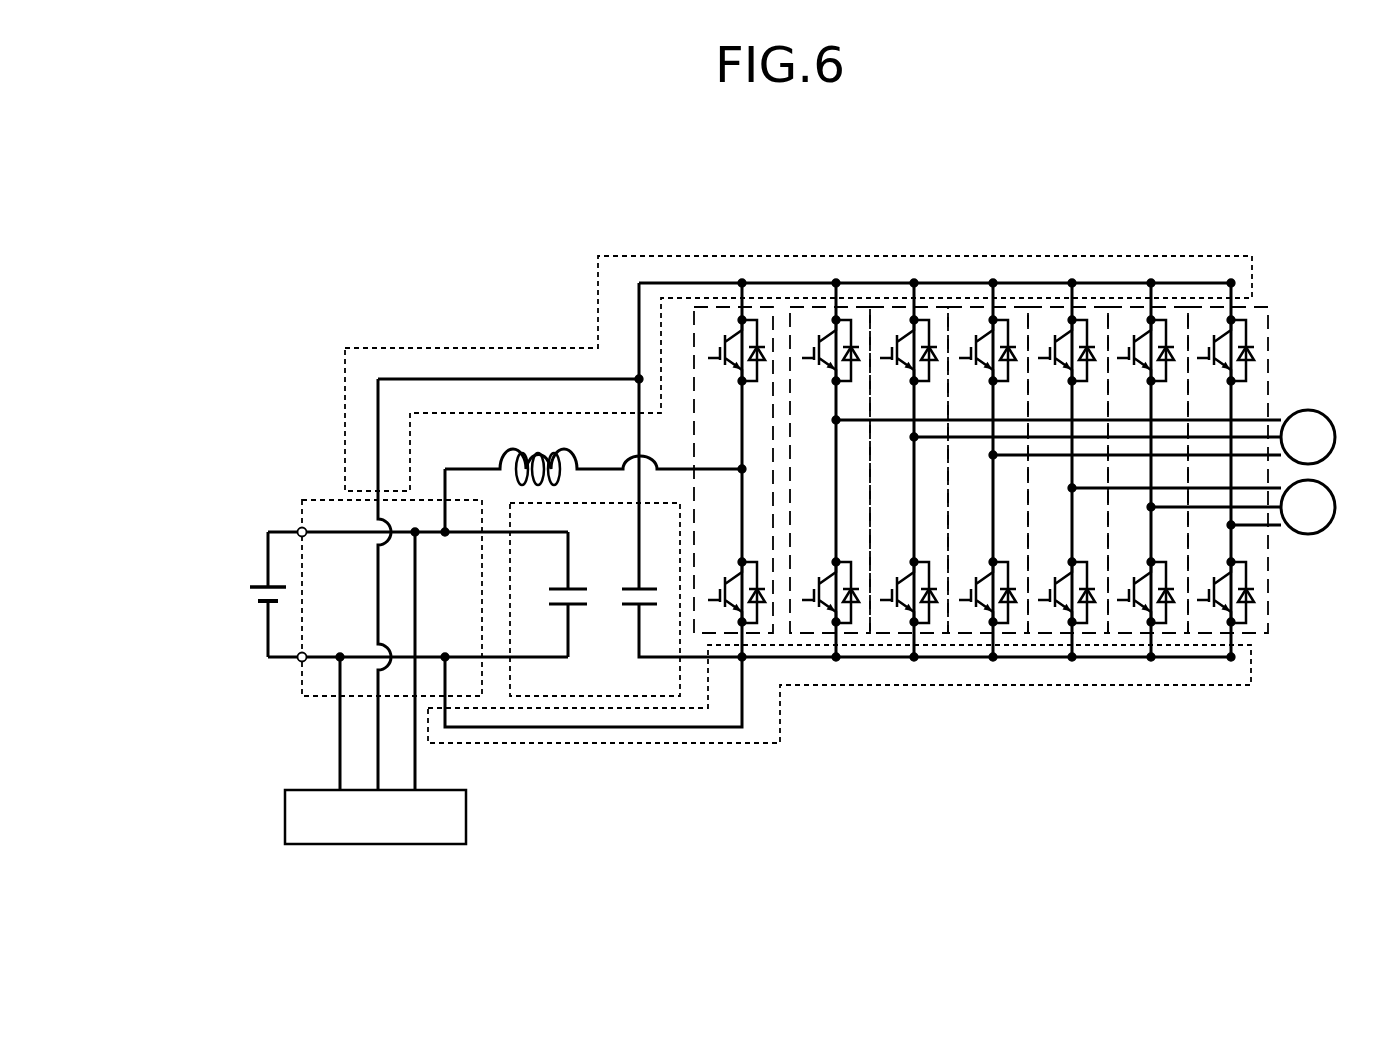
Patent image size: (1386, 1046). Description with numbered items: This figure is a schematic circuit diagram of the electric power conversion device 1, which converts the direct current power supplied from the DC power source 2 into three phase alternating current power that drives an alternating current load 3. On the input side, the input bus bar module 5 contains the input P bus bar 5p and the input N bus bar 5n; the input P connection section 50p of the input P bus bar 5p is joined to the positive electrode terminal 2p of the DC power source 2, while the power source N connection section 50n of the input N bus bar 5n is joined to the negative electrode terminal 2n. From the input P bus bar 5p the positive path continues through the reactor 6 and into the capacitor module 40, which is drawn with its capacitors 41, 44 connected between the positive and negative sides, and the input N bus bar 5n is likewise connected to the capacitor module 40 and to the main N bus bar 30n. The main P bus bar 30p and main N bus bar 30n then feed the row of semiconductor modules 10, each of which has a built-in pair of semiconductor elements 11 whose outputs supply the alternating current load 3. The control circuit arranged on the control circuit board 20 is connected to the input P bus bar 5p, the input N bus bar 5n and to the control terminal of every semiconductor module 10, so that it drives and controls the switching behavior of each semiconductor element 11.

The electric power conversion device 1 is at (1215, 178).
The direct current power source 2 is at (225, 590).
The positive electrode terminal 2p is at (268, 587).
The negative electrode terminal 2n is at (266, 602).
The motor 3 is at (1317, 523).
The input bus bar module 5 is at (305, 558).
The input P bus bar 5p is at (300, 532).
The input N bus bar 5n is at (300, 658).
The input P connection section 50p is at (217, 493).
The power source N connection section 50n is at (249, 698).
The reactor 6 is at (543, 445).
The semiconductor module 10 is at (906, 431).
The semiconductor element 11 is at (712, 338).
The control circuit board 20 is at (466, 814).
The main P bus bar 30p is at (413, 347).
The main N bus bar 30n is at (515, 745).
The capacitor module 40 is at (636, 664).
The filter capacitor 41 is at (572, 605).
The smoothing capacitor 44 is at (643, 605).